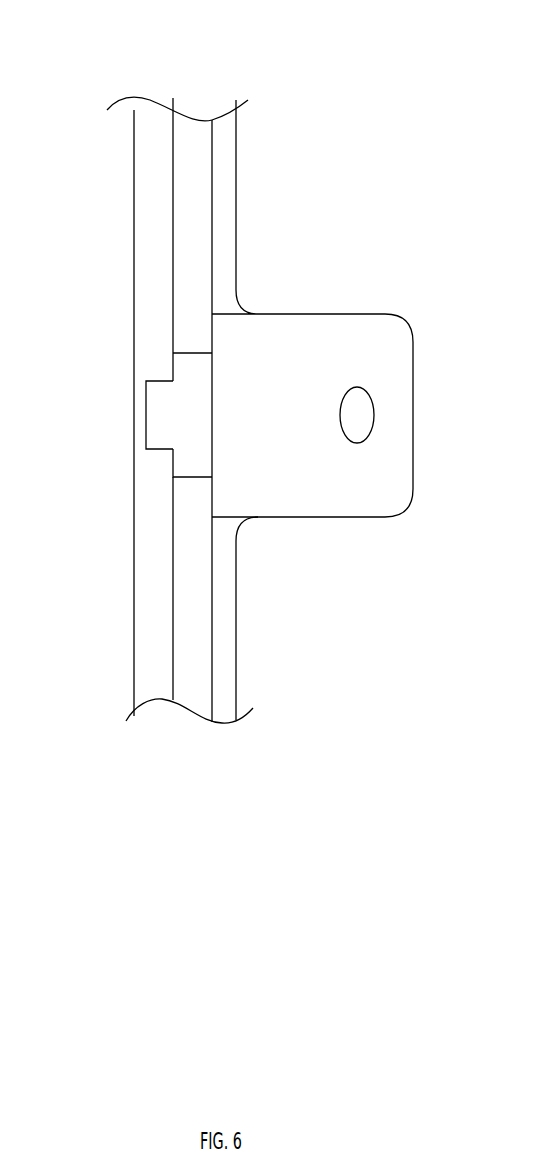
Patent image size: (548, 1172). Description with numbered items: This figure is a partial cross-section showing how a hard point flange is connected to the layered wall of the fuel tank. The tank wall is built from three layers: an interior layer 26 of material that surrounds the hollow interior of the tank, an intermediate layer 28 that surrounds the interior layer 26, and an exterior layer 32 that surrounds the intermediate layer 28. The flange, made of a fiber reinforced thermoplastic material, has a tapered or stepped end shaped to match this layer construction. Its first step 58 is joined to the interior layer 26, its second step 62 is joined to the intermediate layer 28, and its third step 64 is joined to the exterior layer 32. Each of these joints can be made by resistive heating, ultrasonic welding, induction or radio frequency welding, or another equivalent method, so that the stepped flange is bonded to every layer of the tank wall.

The interior layer 26 is at (145, 163).
The intermediate layer 28 is at (189, 123).
The exterior layer 32 is at (218, 180).
The first step 58 is at (157, 410).
The second step 62 is at (193, 461).
The third step 64 is at (222, 500).